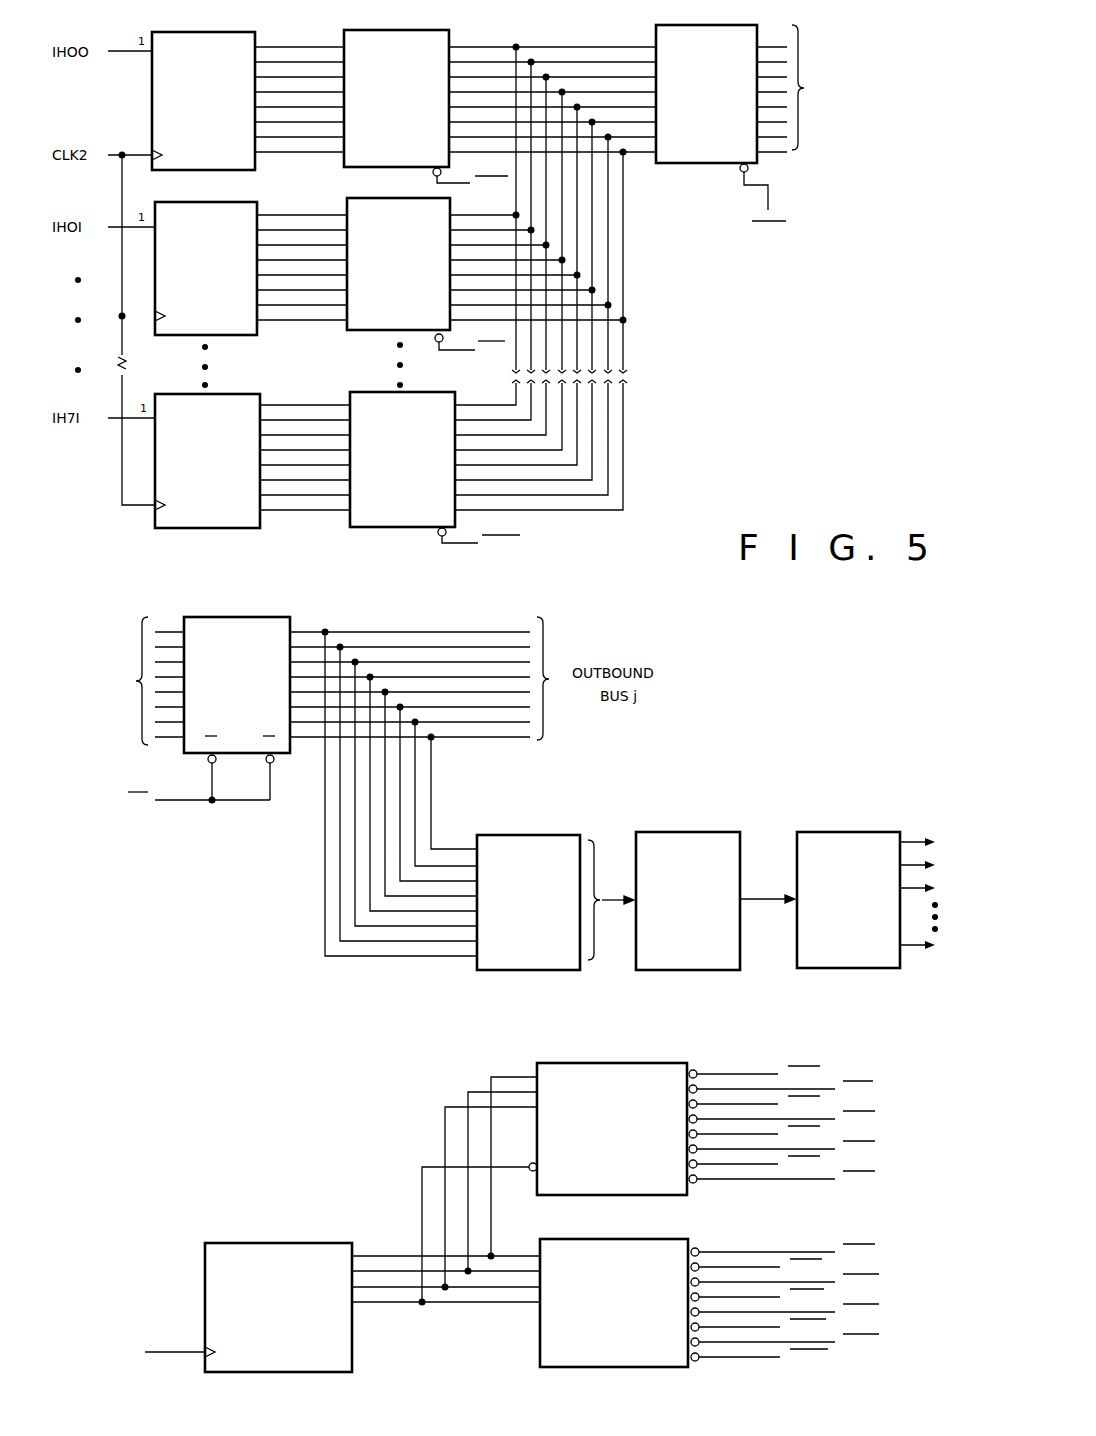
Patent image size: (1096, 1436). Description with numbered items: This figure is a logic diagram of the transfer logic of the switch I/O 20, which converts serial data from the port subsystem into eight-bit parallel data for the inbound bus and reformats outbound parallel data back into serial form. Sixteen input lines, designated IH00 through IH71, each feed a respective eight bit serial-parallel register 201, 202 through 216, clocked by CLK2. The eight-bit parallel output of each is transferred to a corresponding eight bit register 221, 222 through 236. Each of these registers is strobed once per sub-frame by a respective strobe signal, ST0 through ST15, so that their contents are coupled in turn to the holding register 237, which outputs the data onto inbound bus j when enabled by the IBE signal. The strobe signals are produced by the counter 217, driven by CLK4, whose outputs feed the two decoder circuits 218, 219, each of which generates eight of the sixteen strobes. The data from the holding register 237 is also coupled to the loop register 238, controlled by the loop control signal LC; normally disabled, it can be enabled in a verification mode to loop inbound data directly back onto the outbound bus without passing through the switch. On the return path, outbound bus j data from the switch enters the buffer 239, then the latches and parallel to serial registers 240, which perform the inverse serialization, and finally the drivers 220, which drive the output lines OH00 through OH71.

The switch I/O 20 is at (572, 35).
The eight bit serial-parallel register 201 is at (209, 32).
The eight bit serial-parallel register 202 is at (209, 202).
The eight bit serial-parallel register 216 is at (219, 394).
The eight bit register 221 is at (404, 30).
The eight bit register 222 is at (381, 198).
The eight bit register 236 is at (405, 392).
The holding register 237 is at (712, 25).
The loop register 238 is at (240, 617).
The buffer 239 is at (533, 835).
The latches and parallel to serial registers 240 is at (685, 832).
The drivers 220 is at (853, 832).
The decoder circuit 218 is at (635, 1063).
The decoder circuit 219 is at (645, 1239).
The counter 217 is at (305, 1243).